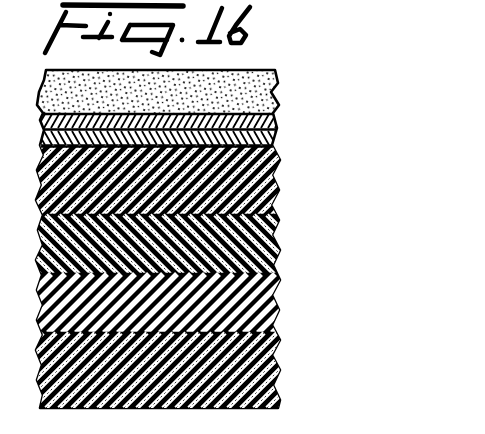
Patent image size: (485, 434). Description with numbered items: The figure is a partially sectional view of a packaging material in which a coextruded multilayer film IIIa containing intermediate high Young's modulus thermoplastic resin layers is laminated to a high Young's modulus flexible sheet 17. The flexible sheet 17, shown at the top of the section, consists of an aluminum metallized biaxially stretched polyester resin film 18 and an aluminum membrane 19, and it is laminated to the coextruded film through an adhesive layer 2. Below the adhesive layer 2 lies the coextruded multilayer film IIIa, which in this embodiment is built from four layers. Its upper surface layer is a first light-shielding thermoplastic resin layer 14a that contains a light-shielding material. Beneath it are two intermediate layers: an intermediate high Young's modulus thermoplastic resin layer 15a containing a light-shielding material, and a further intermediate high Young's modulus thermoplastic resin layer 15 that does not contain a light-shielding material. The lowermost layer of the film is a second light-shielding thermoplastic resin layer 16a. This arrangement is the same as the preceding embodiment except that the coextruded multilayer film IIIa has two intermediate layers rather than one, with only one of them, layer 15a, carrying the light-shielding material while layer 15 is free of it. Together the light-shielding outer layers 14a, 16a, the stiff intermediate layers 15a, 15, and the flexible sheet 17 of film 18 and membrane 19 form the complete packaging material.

The adhesive layer 2 is at (272, 145).
The aluminum metallized biaxially stretched polyester resin film 18 is at (265, 93).
The aluminum membrane 19 is at (272, 126).
The high Young's modulus flexible sheet 17 is at (325, 57).
The first light-shielding thermoplastic resin layer 14a is at (272, 195).
The intermediate high Young's modulus thermoplastic resin layer 15a is at (272, 253).
The intermediate high Young's modulus thermoplastic resin layer 15 is at (273, 315).
The second light-shielding thermoplastic resin layer 16a is at (273, 375).
The coextruded multilayer film IIIa is at (332, 195).